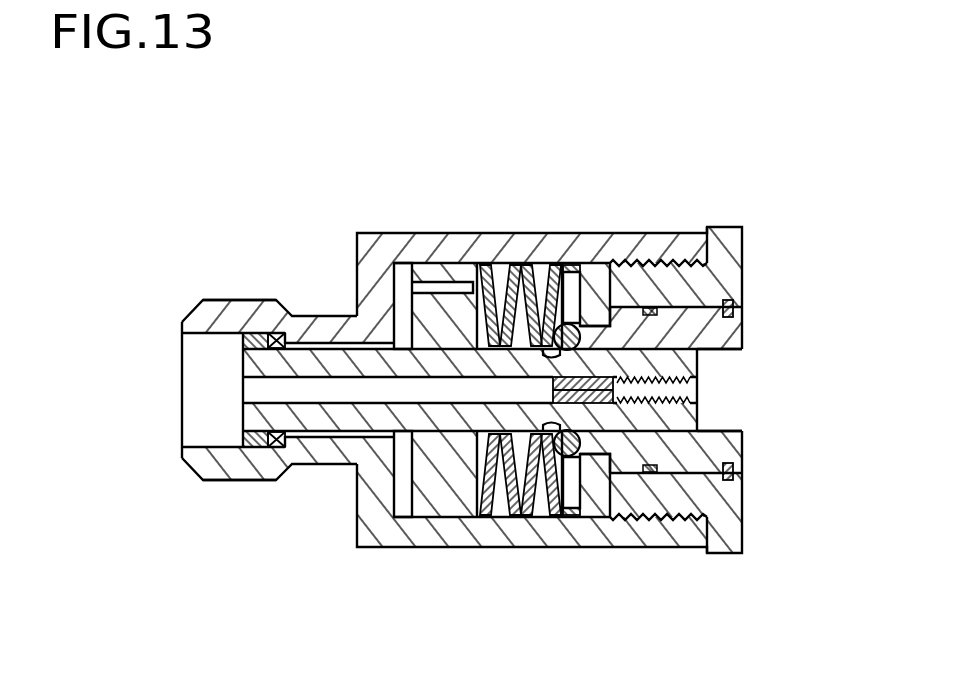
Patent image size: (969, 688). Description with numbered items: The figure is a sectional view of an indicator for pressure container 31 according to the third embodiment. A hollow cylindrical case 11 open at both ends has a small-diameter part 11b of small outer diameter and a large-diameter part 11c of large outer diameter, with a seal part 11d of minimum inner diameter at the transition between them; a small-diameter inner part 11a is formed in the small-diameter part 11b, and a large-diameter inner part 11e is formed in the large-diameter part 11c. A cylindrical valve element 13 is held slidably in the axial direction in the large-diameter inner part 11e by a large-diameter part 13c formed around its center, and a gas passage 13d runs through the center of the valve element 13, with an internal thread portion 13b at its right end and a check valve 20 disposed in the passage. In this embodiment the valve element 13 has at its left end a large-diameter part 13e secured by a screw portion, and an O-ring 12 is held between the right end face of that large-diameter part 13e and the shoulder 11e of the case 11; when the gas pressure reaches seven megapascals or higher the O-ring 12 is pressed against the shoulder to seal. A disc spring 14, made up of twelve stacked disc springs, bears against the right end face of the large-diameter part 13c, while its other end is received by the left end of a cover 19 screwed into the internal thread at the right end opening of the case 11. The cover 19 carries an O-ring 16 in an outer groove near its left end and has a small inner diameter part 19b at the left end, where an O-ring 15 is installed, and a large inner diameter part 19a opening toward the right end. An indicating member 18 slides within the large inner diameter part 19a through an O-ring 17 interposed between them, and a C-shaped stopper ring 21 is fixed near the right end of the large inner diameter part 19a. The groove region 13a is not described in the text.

The case 11 is at (207, 300).
The small-diameter inner part 11a is at (240, 334).
The small-diameter part 11b is at (247, 300).
The large-diameter part 11c is at (426, 263).
The seal part 11d is at (314, 432).
The large-diameter inner part (shoulder) 11e is at (277, 442).
The O-ring 12 is at (282, 332).
The valve element 13 is at (327, 367).
The flange groove 13a is at (420, 282).
The internal thread portion 13b is at (703, 378).
The large-diameter part 13c is at (432, 512).
The gas passage 13d is at (275, 397).
The large-diameter part 13e is at (270, 438).
The disc spring 14 is at (490, 265).
The O-ring 15 is at (530, 278).
The O-ring 16 is at (570, 265).
The O-ring 17 is at (650, 308).
The indicating member 18 is at (680, 300).
The cover 19 is at (728, 233).
The large inner diameter part 19a is at (712, 318).
The small inner diameter part 19b is at (604, 308).
The check valve 20 is at (614, 389).
The stopper ring 21 is at (738, 307).
The indicator for pressure container 31 is at (784, 193).